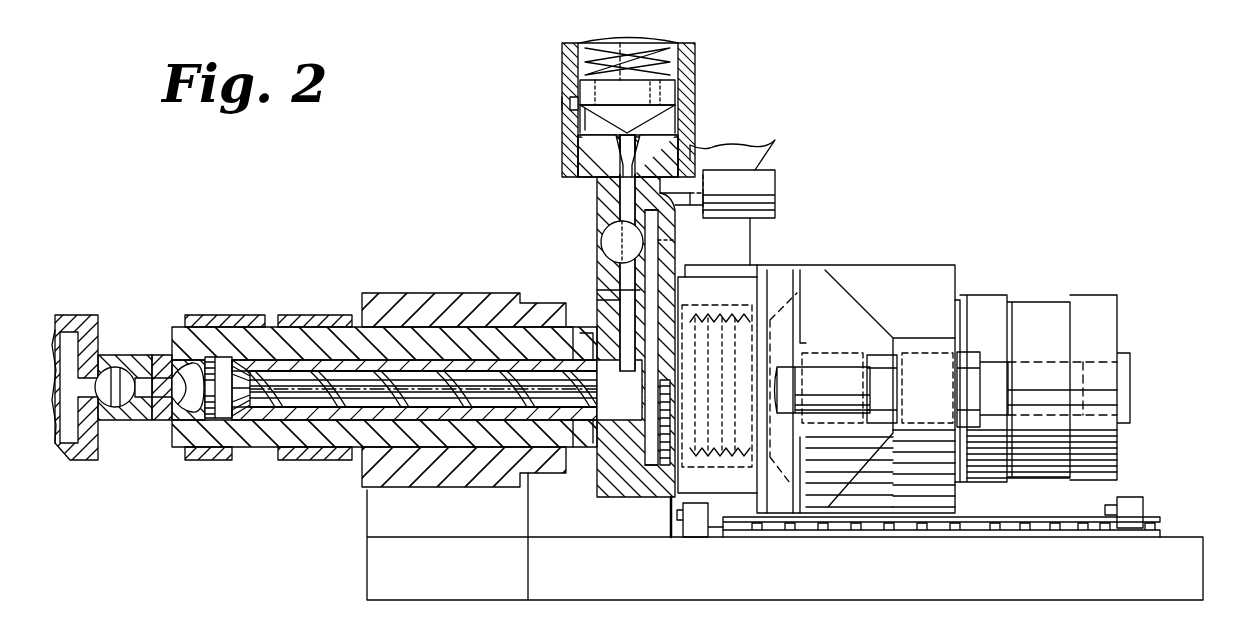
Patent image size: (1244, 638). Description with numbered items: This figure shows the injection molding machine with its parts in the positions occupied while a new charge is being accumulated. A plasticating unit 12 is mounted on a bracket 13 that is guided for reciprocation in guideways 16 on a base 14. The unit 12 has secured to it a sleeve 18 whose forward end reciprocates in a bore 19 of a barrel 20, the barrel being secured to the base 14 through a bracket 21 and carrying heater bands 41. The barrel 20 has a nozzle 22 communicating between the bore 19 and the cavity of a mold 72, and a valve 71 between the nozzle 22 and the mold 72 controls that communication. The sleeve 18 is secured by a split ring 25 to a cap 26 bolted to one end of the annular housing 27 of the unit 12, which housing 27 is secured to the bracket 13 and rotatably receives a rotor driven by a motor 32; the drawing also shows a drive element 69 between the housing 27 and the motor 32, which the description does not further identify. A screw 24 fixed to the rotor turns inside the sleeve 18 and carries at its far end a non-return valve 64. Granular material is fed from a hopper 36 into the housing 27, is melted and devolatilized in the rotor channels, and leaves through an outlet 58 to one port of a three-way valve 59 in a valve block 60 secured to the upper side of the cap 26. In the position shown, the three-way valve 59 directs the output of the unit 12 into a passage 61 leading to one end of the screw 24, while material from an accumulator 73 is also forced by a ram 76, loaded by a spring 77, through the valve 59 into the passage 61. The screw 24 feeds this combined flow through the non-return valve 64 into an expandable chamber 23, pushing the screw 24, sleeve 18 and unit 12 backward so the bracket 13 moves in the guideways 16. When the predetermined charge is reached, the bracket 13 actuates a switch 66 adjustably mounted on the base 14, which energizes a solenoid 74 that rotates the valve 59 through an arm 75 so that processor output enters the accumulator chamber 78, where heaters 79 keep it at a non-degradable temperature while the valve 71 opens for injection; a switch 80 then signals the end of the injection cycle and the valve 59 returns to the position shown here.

The plasticating unit 12 is at (616, 512).
The bracket 13 is at (905, 268).
The base 14 is at (372, 573).
The guideways 16 is at (1008, 530).
The sleeve 18 is at (396, 365).
The bore 19 is at (302, 372).
The barrel 20 is at (268, 328).
The bracket 21 is at (486, 296).
The nozzle 22 is at (160, 353).
The expandable chamber 23 is at (190, 420).
The screw 24 is at (326, 461).
The split ring 25 is at (594, 440).
The cap 26 is at (632, 498).
The annular housing 27 is at (733, 500).
The motor 32 is at (1095, 300).
The hopper 36 is at (772, 140).
The heater bands 41 is at (234, 461).
The outlet 58 is at (662, 265).
The three-way valve 59 is at (600, 250).
The valve block 60 is at (597, 210).
The passage 61 is at (597, 294).
The non-return valve 64 is at (220, 357).
The switch 66 is at (1135, 497).
The drive shaft 69 is at (855, 370).
The valve 71 is at (116, 408).
The mold 72 is at (72, 316).
The accumulator 73 is at (572, 103).
The solenoid 74 is at (768, 190).
The arm 75 is at (708, 182).
The ram 76 is at (680, 95).
The spring 77 is at (650, 38).
The accumulator chamber 78 is at (578, 131).
The heaters 79 is at (562, 62).
The switch 80 is at (698, 538).